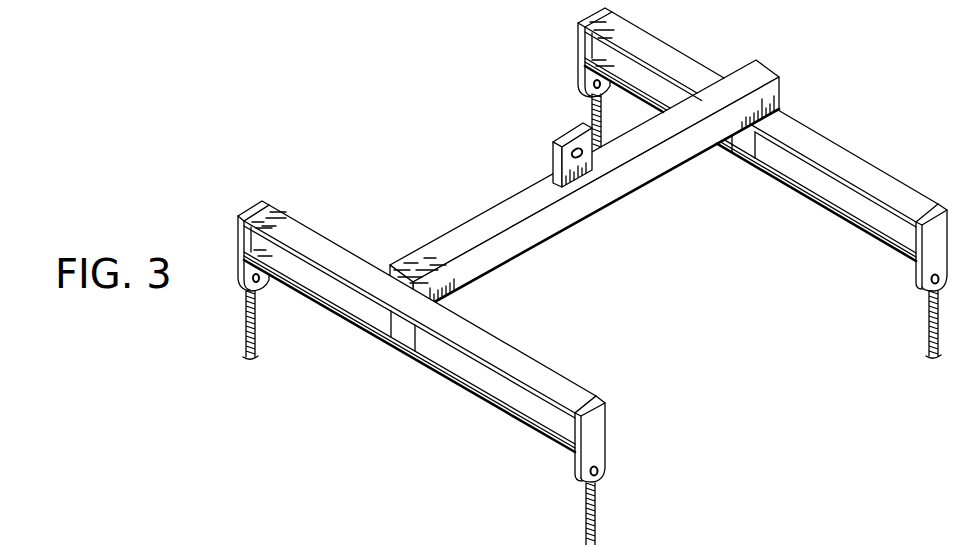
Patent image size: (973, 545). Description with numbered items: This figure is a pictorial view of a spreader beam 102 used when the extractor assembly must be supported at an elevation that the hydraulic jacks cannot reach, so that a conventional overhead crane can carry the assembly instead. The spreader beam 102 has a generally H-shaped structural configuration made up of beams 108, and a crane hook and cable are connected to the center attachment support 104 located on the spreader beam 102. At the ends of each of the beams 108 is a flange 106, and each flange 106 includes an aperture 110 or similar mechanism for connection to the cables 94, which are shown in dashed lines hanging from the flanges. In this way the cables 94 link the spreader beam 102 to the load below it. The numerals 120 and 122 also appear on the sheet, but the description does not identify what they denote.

The cables 94 is at (256, 349).
The spreader beam 102 is at (437, 214).
The center attachment support 104 is at (553, 129).
The flange 106 is at (590, 437).
The beams 108 is at (830, 150).
The aperture 110 is at (597, 477).
The load 120 is at (712, 539).
The frame 122 is at (247, 539).